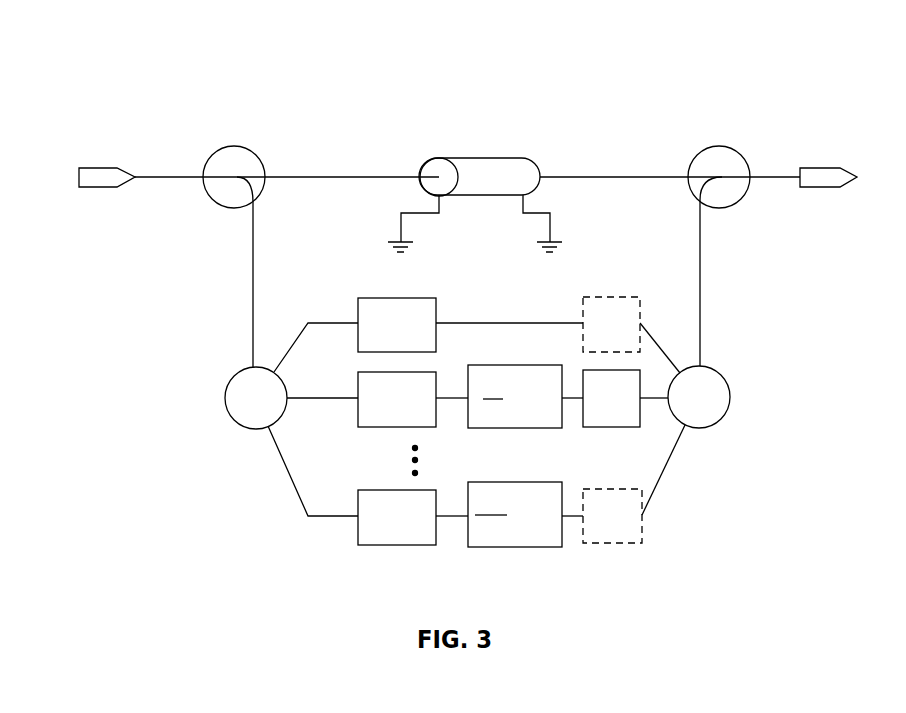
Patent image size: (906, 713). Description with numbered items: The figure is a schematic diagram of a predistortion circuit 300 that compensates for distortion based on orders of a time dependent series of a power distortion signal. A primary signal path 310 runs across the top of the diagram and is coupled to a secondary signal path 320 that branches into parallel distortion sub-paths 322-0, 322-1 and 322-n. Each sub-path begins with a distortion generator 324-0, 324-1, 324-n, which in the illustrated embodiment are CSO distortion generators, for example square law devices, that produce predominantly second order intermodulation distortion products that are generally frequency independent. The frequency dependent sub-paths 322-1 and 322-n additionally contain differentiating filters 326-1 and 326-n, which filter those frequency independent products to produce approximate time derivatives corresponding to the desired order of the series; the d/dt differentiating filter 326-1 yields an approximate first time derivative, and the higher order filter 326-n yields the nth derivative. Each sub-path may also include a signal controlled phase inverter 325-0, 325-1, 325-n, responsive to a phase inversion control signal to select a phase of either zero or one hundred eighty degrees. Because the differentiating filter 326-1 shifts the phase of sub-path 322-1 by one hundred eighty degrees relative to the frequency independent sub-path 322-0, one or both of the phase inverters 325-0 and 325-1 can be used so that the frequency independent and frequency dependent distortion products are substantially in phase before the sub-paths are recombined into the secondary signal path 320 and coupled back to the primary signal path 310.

The predistortion circuit 300 is at (297, 84).
The primary signal path 310 is at (516, 120).
The secondary signal path 320 is at (163, 336).
The distortion sub-path 322-0 is at (283, 327).
The distortion sub-path 322-1 is at (302, 422).
The distortion sub-path 322-n is at (276, 510).
The distortion generator 324-0 is at (358, 306).
The distortion generator 324-1 is at (350, 427).
The distortion generator 324-n is at (358, 532).
The signal controlled phase inverter 325-0 is at (612, 297).
The signal controlled phase inverter 325-1 is at (607, 427).
The signal controlled phase inverter 325-n is at (620, 543).
The differentiating filter 326-1 is at (530, 428).
The differentiating filter 326-n is at (512, 547).